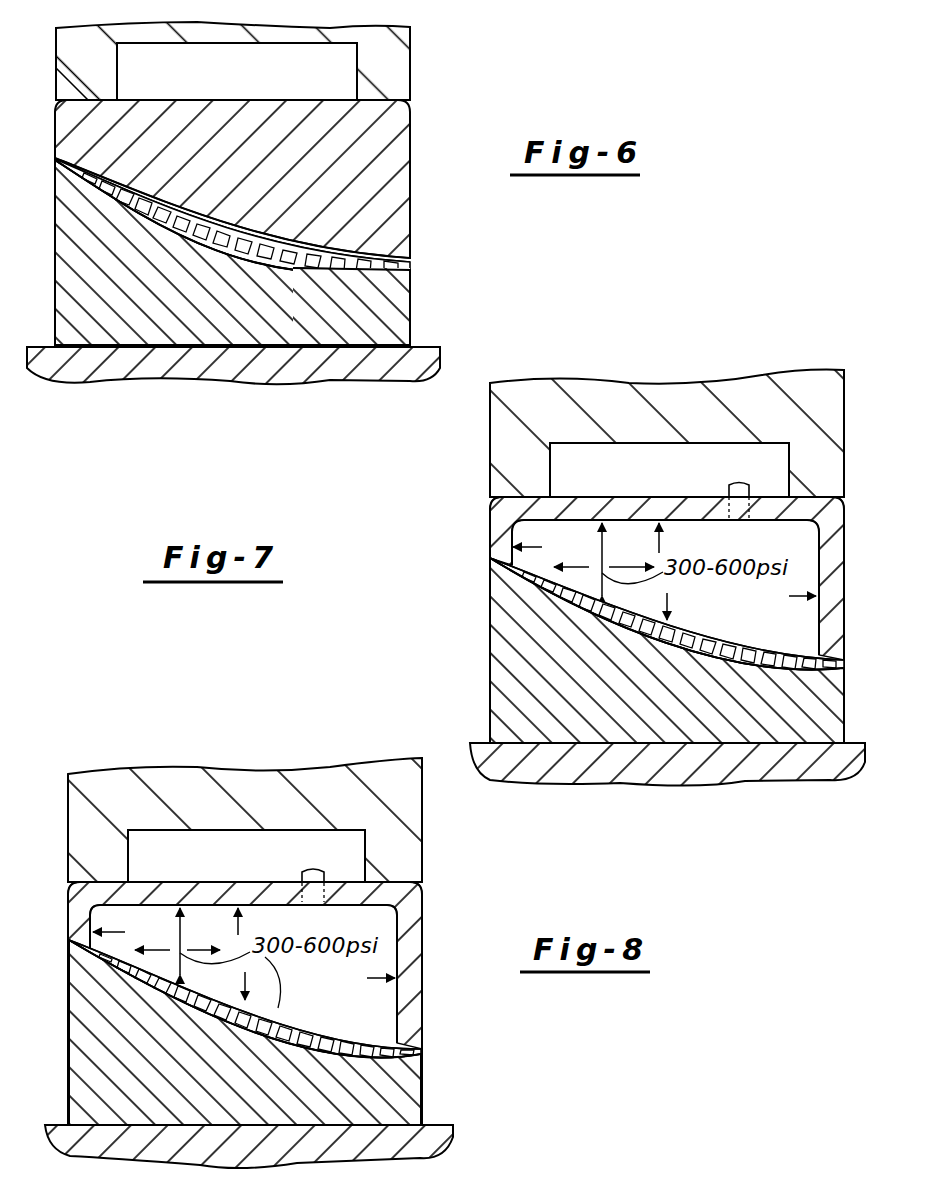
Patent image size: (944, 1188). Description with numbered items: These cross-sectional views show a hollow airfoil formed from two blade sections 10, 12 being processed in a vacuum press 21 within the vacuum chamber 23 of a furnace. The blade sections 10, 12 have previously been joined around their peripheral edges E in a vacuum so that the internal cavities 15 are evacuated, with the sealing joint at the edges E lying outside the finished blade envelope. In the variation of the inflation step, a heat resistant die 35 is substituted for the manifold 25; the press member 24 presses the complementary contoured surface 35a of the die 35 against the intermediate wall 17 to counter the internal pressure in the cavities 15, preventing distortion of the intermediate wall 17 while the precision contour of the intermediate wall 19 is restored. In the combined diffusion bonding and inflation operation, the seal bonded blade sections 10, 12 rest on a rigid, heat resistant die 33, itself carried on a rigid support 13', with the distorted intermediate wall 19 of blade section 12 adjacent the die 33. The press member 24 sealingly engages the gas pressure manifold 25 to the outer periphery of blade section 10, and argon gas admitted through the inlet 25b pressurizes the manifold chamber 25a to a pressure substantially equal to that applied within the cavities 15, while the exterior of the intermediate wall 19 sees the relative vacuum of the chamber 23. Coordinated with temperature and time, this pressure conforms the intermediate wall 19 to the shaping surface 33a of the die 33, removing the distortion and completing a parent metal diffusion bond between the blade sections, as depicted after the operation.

In FIG. 6, the blade section 10 is at (393, 253).
In FIG. 7, the blade section 10 is at (773, 648).
In FIG. 8, the blade section 10 is at (378, 1032).
In FIG. 6, the blade section 12 is at (387, 274).
In FIG. 7, the blade section 12 is at (504, 570).
In FIG. 8, the blade section 12 is at (113, 975).
In FIG. 6, the rigid support 13' is at (244, 356).
In FIG. 7, the rigid support 13' is at (667, 777).
In FIG. 8, the rigid support 13' is at (272, 1146).
In FIG. 7, the cavities 15 is at (630, 613).
In FIG. 6, the intermediate wall 17 is at (333, 236).
In FIG. 7, the intermediate wall 17 is at (733, 642).
In FIG. 8, the intermediate wall 17 is at (401, 1040).
In FIG. 6, the intermediate wall 19 is at (293, 268).
In FIG. 7, the intermediate wall 19 is at (712, 657).
In FIG. 8, the intermediate wall 19 is at (203, 1009).
In FIG. 7, the vacuum press 21 is at (692, 373).
In FIG. 6, the vacuum chamber 23 is at (446, 156).
In FIG. 7, the vacuum chamber 23 is at (450, 516).
In FIG. 8, the vacuum chamber 23 is at (476, 1035).
In FIG. 6, the press member 24 is at (410, 90).
In FIG. 7, the press member 24 is at (512, 418).
In FIG. 8, the press member 24 is at (232, 788).
In FIG. 8, the gas pressure manifold 25 is at (411, 954).
In FIG. 7, the chamber 25a is at (762, 555).
In FIG. 8, the chamber 25a is at (393, 926).
In FIG. 7, the inlet 25b is at (731, 482).
In FIG. 8, the inlet 25b is at (304, 870).
In FIG. 6, the rigid die 33 is at (378, 322).
In FIG. 7, the rigid die 33 is at (497, 688).
In FIG. 8, the rigid die 33 is at (404, 1106).
In FIG. 7, the shaping surface 33a is at (664, 655).
In FIG. 6, the heat resistant die 35 is at (390, 188).
In FIG. 6, the complementary contoured surface 35a is at (337, 247).
In FIG. 7, the peripheral edges E is at (490, 558).
In FIG. 8, the peripheral edges E is at (68, 939).